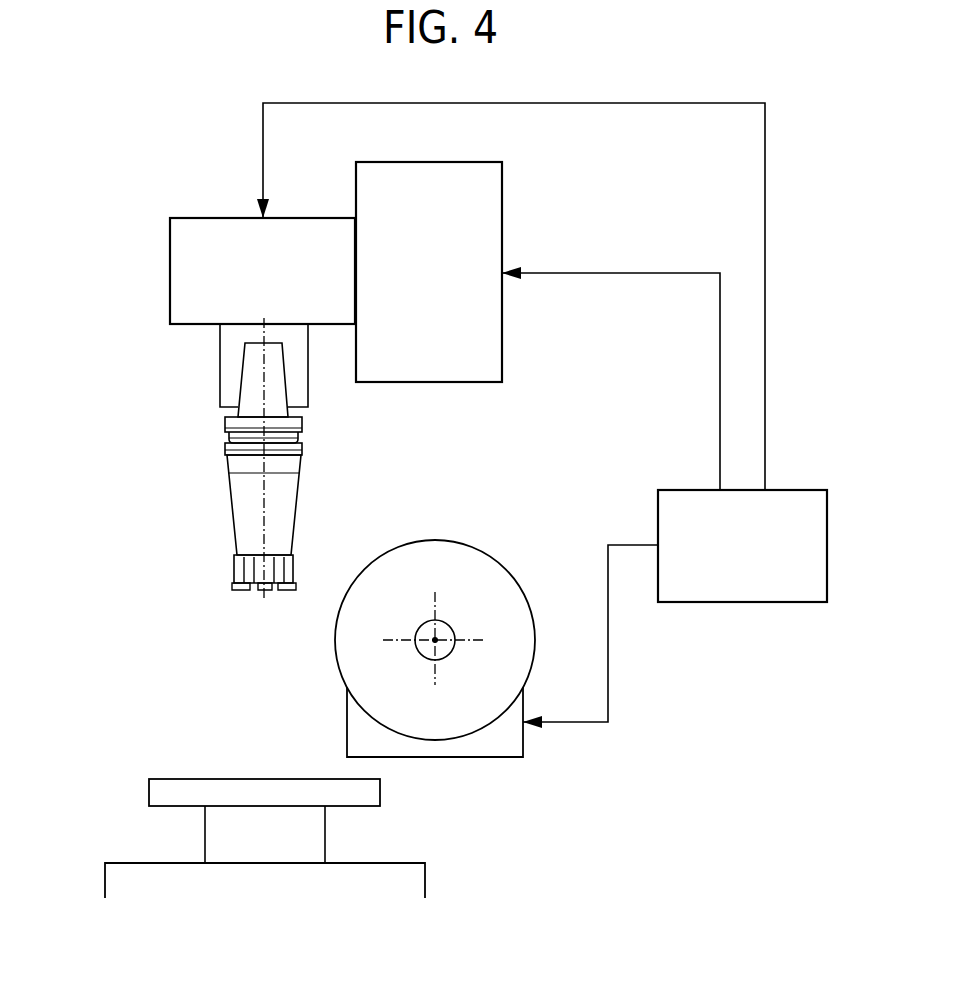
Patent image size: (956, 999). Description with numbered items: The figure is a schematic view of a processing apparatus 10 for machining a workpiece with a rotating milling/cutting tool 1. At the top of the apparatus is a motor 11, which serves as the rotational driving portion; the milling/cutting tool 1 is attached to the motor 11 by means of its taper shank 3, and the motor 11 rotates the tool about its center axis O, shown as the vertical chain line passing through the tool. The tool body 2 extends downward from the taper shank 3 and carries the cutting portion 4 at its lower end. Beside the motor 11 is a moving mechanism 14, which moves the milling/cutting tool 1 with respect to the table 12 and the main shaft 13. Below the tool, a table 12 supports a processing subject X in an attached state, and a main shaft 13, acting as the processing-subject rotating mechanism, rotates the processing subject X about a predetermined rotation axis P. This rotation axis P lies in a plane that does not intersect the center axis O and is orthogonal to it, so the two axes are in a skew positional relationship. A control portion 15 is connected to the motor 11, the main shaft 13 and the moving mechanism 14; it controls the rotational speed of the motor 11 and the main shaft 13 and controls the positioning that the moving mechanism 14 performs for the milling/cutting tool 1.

The milling/cutting tool 1 is at (197, 503).
The tool holder 2 is at (231, 500).
The taper shank 3 is at (245, 372).
The cutter (cutting edges) 4 is at (247, 590).
The processing apparatus 10 is at (158, 160).
The motor 11 is at (170, 268).
The table 12 is at (280, 779).
The main shaft 13 is at (503, 757).
The moving mechanism 14 is at (425, 382).
The control portion 15 is at (728, 602).
The center axis O is at (266, 483).
The processing subject X is at (455, 625).
The rotation axis P is at (436, 639).